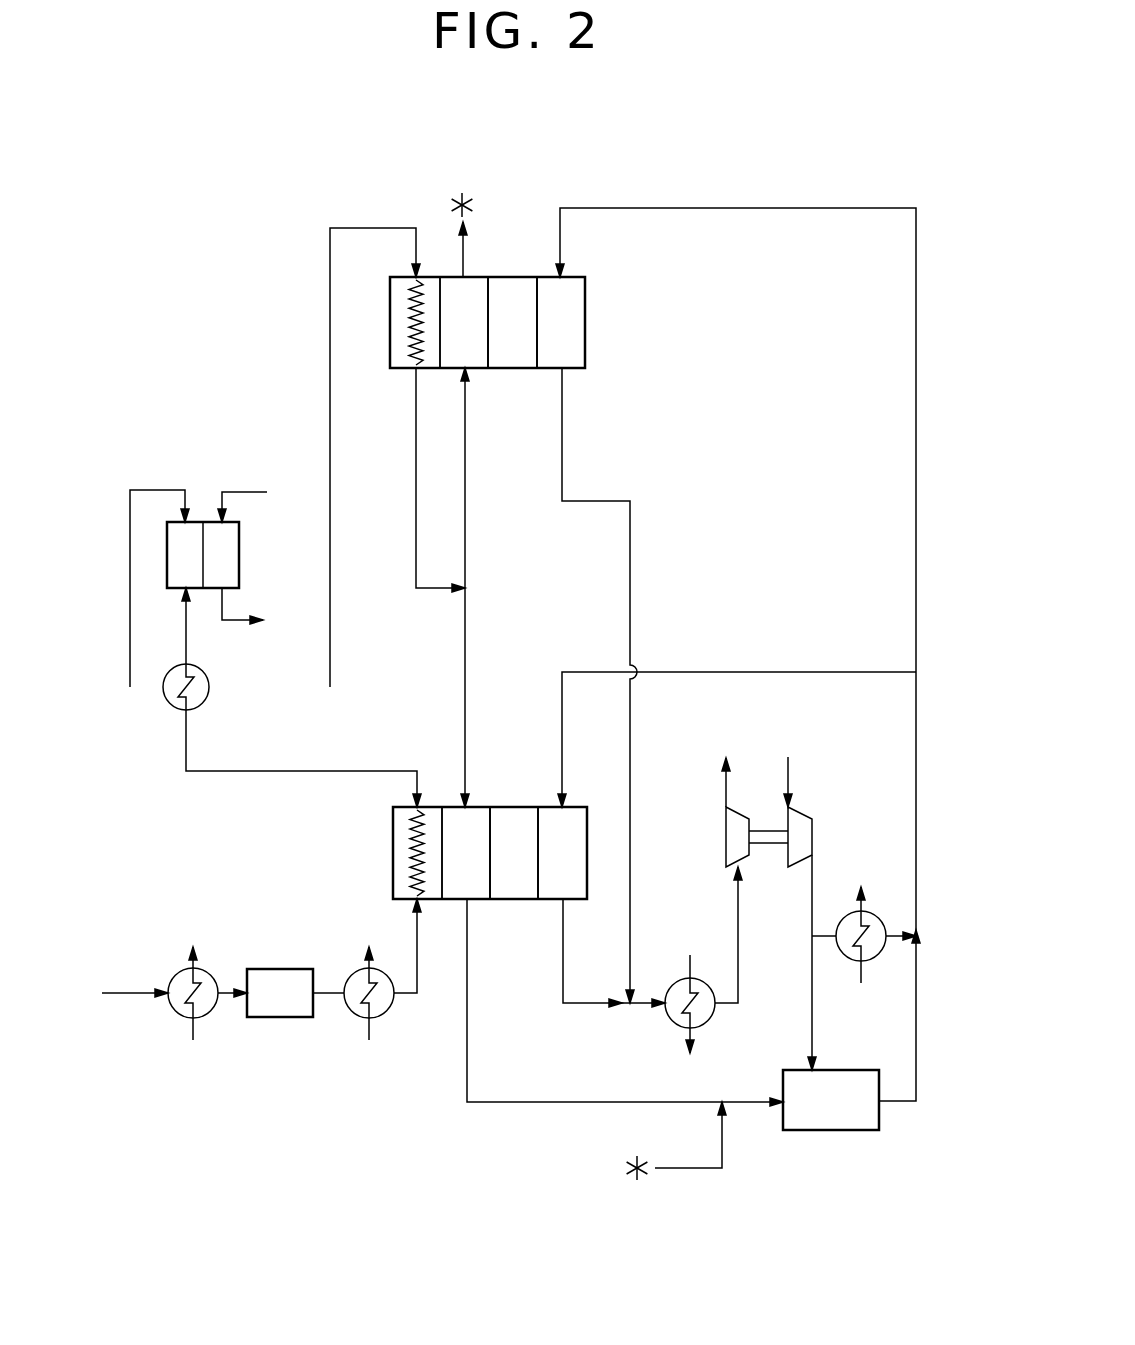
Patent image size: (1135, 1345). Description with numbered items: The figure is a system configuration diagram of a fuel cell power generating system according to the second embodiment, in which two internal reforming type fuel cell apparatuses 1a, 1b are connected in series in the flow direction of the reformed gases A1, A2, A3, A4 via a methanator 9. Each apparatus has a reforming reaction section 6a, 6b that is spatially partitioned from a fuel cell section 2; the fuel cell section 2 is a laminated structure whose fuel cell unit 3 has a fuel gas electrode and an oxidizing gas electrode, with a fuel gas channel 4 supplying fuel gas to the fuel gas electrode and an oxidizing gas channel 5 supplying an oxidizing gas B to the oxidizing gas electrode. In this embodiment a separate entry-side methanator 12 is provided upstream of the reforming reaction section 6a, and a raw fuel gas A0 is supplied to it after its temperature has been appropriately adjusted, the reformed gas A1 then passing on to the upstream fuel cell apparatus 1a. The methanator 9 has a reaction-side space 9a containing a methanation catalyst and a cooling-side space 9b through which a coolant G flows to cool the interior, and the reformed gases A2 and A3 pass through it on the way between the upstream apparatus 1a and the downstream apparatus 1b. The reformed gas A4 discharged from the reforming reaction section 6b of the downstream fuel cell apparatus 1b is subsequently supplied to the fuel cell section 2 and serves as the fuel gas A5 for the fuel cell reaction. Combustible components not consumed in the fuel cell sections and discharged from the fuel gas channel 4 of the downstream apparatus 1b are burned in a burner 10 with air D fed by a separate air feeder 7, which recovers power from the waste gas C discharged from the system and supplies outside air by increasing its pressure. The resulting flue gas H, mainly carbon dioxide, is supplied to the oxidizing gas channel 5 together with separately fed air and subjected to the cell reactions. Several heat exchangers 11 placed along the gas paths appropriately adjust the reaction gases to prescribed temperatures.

The upstream fuel cell apparatus 1a is at (582, 974).
The downstream fuel cell apparatus 1b is at (555, 193).
The fuel cell section 2 is at (500, 370).
The fuel cell unit 3 is at (519, 272).
The fuel gas channel 4 is at (478, 272).
The oxidizing gas channel 5 is at (580, 272).
The reforming reaction section 6a is at (393, 872).
The reforming reaction section 6b is at (391, 322).
The air feeder 7 is at (812, 820).
The methanator 9 is at (239, 573).
The reaction-side space 9a is at (167, 555).
The cooling-side space 9b is at (239, 540).
The burner 10 is at (830, 1131).
The heat exchanger 11 is at (170, 707).
The entry-side methanator 12 is at (270, 1018).
The raw fuel gas A0 is at (125, 997).
The reformed gas A1 is at (412, 998).
The reformed gas A2 is at (395, 768).
The reformed gas A3 is at (330, 326).
The reformed gas A4 is at (455, 255).
The fuel gas A5 is at (505, 1105).
The oxidizing gas B is at (562, 437).
The waste gas C is at (726, 790).
The air D is at (790, 765).
The coolant G is at (254, 499).
The flue gas H is at (917, 1040).